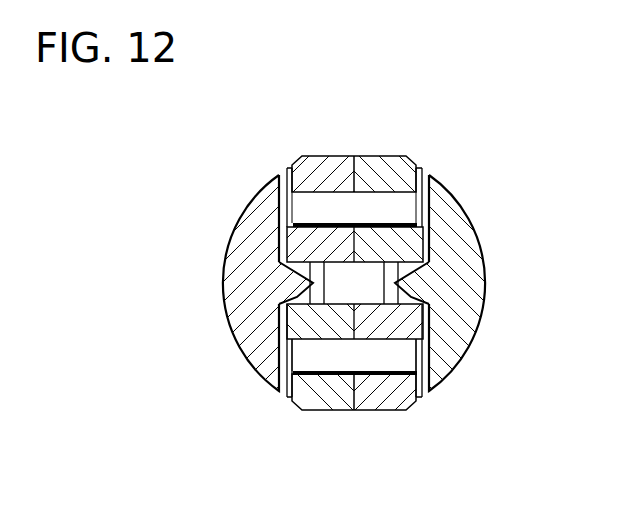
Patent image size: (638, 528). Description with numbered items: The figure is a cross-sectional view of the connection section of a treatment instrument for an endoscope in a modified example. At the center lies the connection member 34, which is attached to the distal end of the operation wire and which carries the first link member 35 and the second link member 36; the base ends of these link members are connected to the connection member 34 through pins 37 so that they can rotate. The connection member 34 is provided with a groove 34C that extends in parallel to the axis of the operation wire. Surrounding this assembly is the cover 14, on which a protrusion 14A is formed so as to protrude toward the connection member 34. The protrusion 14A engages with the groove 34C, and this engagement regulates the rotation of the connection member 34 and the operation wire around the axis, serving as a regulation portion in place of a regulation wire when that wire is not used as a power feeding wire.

The cover 14 is at (243, 327).
The protrusion 14A is at (293, 288).
The connection member 34 is at (319, 260).
The groove 34C is at (312, 282).
The first link member 35 is at (323, 160).
The second link member 36 is at (385, 397).
The pin 37 is at (308, 205).